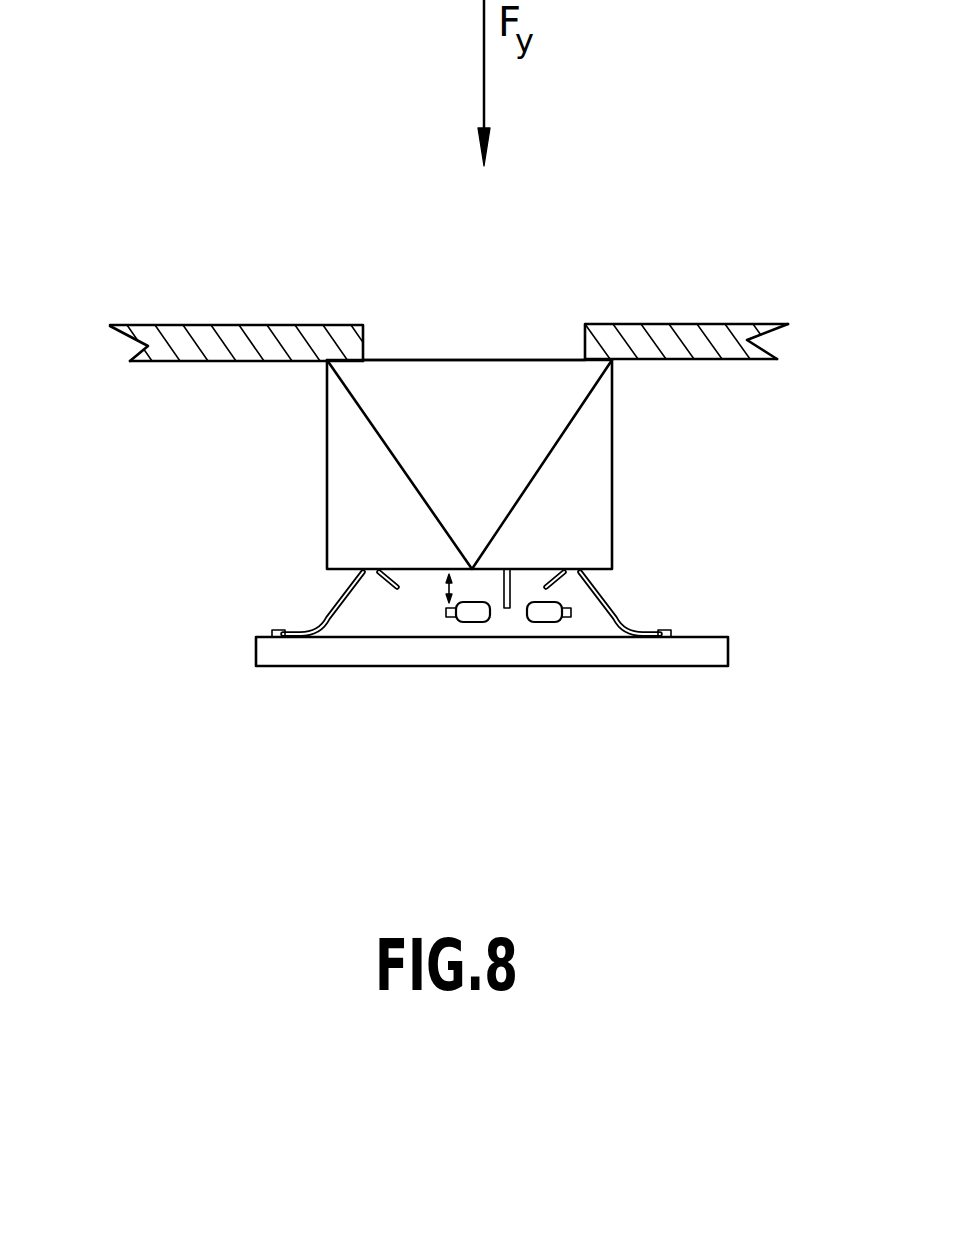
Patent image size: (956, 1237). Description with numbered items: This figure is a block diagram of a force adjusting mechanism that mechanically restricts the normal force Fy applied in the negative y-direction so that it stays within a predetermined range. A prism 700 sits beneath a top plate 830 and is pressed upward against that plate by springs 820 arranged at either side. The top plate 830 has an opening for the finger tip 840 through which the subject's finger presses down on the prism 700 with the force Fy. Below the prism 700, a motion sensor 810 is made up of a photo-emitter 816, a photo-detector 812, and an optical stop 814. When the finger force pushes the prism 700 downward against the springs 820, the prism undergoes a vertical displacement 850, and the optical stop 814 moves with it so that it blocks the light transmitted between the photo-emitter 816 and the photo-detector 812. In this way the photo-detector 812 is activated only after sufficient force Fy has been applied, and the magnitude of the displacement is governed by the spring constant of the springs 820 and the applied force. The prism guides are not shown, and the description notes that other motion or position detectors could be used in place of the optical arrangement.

The prism 700 is at (327, 477).
The motion sensor 810 is at (547, 705).
The photo-detector 812 is at (567, 620).
The optical stop 814 is at (507, 608).
The photo-emitter 816 is at (478, 622).
The springs 820 is at (322, 602).
The top plate 830 is at (212, 323).
The opening for the finger tip 840 is at (503, 333).
The vertical displacement 850 is at (447, 593).